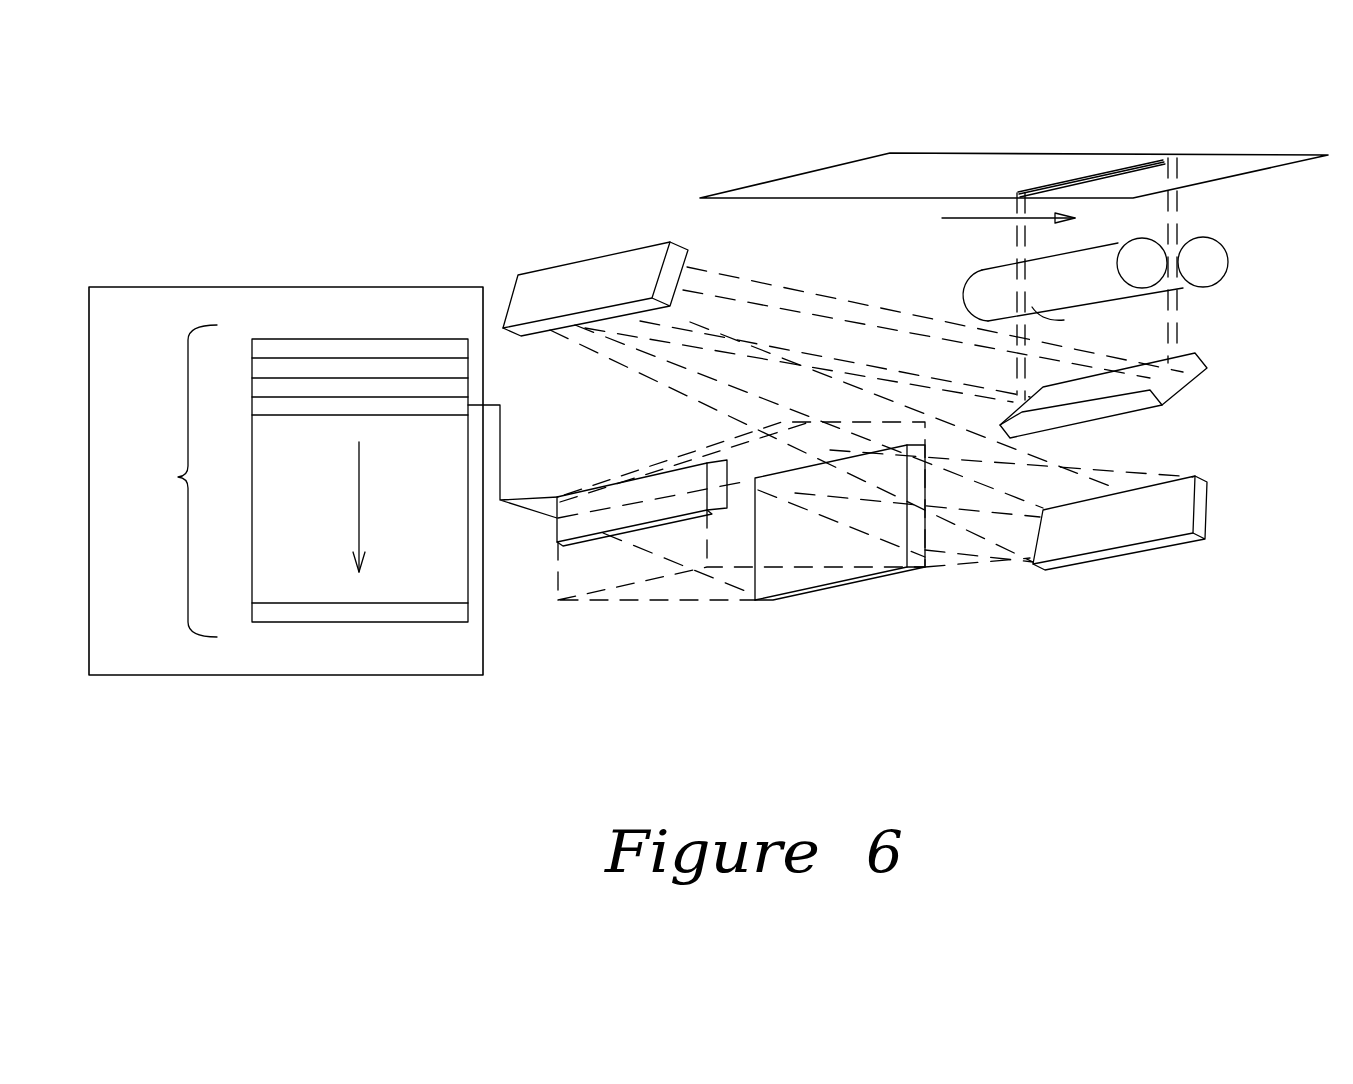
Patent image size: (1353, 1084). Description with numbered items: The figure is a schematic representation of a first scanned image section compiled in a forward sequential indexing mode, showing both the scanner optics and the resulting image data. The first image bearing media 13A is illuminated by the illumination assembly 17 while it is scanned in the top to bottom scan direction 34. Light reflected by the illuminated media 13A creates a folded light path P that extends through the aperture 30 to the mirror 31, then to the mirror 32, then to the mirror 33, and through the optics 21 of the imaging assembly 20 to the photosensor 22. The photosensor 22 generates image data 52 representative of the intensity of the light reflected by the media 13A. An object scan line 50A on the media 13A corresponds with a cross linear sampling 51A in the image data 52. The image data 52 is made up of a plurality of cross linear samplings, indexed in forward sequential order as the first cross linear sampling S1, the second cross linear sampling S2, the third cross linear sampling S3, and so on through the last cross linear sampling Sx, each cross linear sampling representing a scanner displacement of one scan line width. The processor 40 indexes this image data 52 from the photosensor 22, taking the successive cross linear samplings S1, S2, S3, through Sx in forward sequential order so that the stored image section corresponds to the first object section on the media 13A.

The processor 40 is at (318, 294).
The image data 52 is at (301, 481).
The first cross linear sampling S1 is at (252, 347).
The second cross linear sampling S2 is at (252, 367).
The third cross linear sampling S3 is at (252, 387).
The last cross linear sampling Sx is at (252, 614).
The cross linear sampling 51A is at (416, 406).
The top to bottom scan direction 34 is at (359, 512).
The mirror 32 is at (572, 268).
The folded light path P is at (825, 293).
The first image bearing media 13A is at (1027, 153).
The object scan line 50A is at (1017, 190).
The illumination assembly 17 is at (1110, 293).
The aperture 30 is at (1170, 252).
The mirror 31 is at (1177, 387).
The mirror 33 is at (1205, 508).
The photosensor 22 is at (558, 528).
The imaging assembly 20 is at (572, 580).
The optics 21 is at (797, 597).